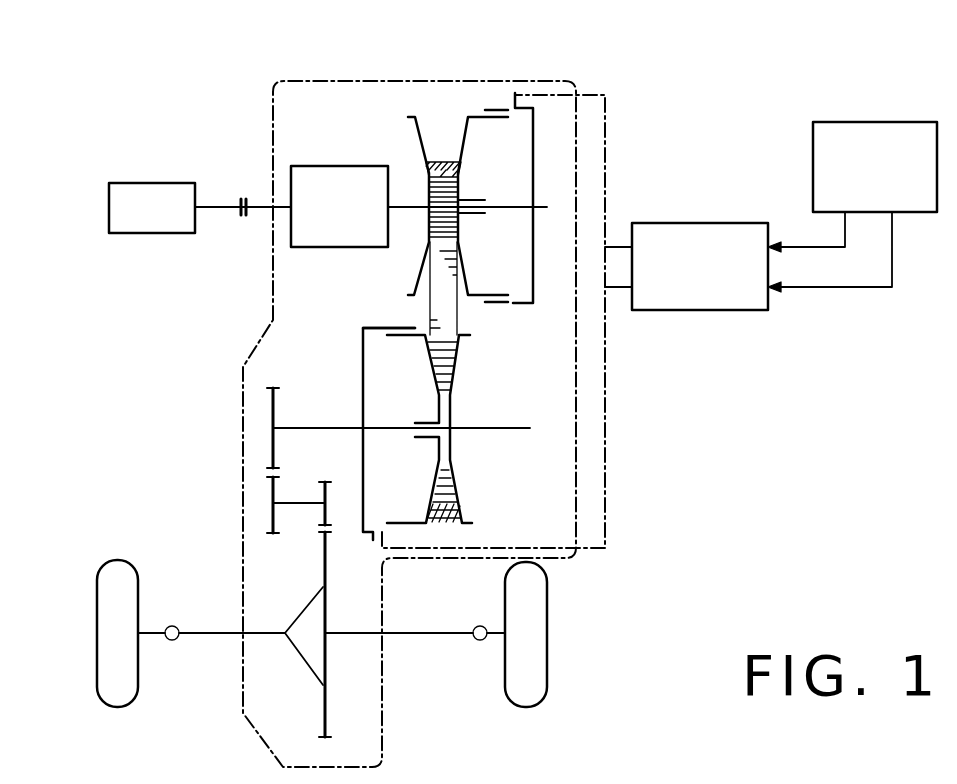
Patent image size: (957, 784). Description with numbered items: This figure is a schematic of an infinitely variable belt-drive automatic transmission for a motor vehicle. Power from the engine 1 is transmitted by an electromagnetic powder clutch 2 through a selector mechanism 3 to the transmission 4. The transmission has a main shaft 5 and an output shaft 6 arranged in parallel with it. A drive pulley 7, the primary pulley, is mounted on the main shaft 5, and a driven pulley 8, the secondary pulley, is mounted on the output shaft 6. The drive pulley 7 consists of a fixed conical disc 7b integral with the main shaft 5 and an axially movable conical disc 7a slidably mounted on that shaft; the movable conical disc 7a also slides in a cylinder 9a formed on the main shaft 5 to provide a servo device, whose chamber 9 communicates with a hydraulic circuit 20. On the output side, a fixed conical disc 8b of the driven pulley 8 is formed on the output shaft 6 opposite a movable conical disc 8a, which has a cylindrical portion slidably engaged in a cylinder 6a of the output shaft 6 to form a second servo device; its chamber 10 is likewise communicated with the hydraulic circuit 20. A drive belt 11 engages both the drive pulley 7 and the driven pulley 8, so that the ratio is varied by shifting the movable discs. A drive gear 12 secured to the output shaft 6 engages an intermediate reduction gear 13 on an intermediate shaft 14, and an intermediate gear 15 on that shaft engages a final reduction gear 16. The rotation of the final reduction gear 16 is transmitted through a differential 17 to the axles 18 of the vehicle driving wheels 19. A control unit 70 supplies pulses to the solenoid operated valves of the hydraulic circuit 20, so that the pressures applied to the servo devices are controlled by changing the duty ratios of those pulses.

The engine 1 is at (158, 183).
The electromagnetic powder clutch 2 is at (243, 199).
The selector mechanism 3 is at (343, 166).
The transmission 4 is at (450, 118).
The main shaft 5 is at (402, 210).
The output shaft 6 is at (323, 428).
The cylinder of the output shaft 6a is at (384, 328).
The drive pulley 7 is at (393, 118).
The axially movable conical disc 7a is at (478, 117).
The fixed conical disc 7b is at (420, 141).
The driven pulley 8 is at (477, 492).
The movable conical disc 8a is at (425, 345).
The fixed conical disc 8b is at (457, 372).
The chamber 9 is at (517, 165).
The cylinder 9a is at (513, 303).
The chamber 10 is at (363, 363).
The drive belt 11 is at (448, 518).
The drive gear 12 is at (276, 388).
The intermediate reduction gear 13 is at (275, 533).
The intermediate shaft 14 is at (300, 503).
The intermediate gear 15 is at (327, 482).
The final reduction gear 16 is at (331, 738).
The differential 17 is at (310, 616).
The axles 18 is at (164, 635).
The vehicle driving wheels 19 is at (130, 591).
The hydraulic circuit 20 is at (696, 310).
The control unit 70 is at (850, 122).